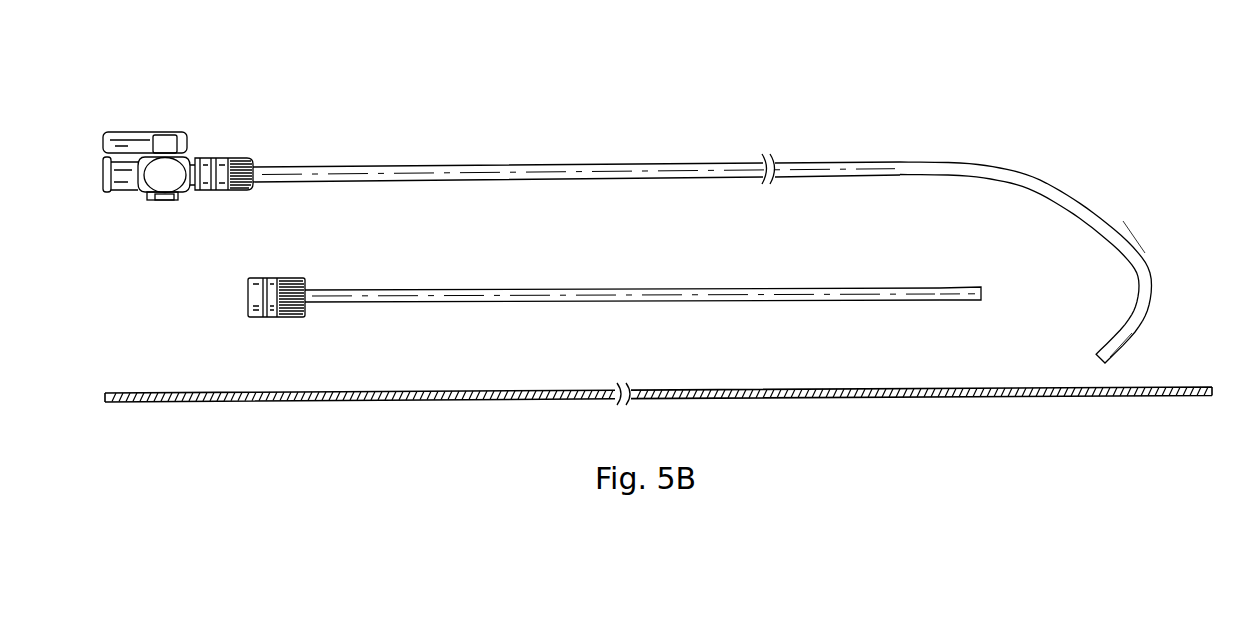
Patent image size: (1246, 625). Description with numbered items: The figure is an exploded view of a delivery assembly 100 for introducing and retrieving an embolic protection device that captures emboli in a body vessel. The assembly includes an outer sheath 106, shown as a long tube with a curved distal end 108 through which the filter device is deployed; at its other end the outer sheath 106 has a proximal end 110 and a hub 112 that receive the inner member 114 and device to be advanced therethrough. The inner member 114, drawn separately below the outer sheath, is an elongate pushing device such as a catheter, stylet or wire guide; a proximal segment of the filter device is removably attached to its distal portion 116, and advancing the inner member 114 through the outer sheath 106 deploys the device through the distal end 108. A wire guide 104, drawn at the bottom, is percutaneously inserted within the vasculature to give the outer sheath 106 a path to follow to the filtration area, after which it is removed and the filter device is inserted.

The delivery assembly 100 is at (197, 88).
The wire guide 104 is at (429, 390).
The outer sheath 106 is at (555, 165).
The distal end 108 is at (1103, 366).
The proximal end 110 is at (253, 165).
The hub 112 is at (172, 180).
The inner member 114 is at (367, 290).
The distal portion 116 is at (922, 286).